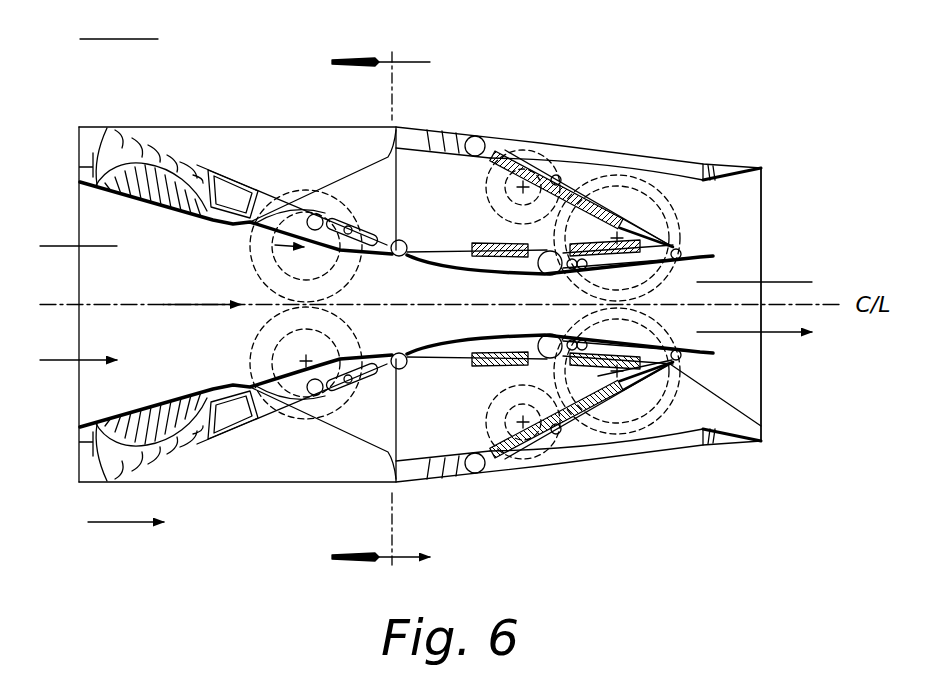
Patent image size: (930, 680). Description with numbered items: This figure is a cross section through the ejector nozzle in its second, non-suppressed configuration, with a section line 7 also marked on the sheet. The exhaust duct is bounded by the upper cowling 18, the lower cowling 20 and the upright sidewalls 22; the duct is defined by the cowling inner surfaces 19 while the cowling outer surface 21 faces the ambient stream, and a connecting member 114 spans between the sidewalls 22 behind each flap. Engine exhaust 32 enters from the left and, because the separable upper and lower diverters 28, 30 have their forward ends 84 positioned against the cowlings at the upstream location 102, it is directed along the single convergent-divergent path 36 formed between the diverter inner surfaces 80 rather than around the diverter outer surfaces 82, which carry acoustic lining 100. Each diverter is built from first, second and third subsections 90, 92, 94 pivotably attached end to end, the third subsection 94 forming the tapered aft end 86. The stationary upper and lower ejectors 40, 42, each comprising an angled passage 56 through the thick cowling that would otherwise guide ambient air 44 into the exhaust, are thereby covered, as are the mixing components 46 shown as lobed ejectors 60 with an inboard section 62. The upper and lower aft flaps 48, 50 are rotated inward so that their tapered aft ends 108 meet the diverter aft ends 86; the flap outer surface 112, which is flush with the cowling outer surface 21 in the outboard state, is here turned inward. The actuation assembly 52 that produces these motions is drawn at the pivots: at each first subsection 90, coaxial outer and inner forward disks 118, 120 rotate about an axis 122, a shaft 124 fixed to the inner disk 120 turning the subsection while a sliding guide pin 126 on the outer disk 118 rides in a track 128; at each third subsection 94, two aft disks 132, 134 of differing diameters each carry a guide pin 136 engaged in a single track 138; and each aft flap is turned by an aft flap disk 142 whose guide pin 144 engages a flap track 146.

The section line 7- 7 is at (397, 308).
The upper cowling 18 is at (90, 127).
The cowling inner surface 19 is at (128, 193).
The lower cowling 20 is at (86, 482).
The cowling outer surface 21 is at (253, 126).
The upright sidewalls 22 is at (752, 192).
The upper diverter 28 is at (430, 243).
The lower diverter 30 is at (430, 364).
The engine exhaust 32 is at (55, 252).
The single path 36 is at (182, 303).
The upper ejector 40 is at (176, 118).
The lower ejector 42 is at (296, 496).
The ambient air 44 is at (93, 42).
The mixing components 46 is at (400, 204).
The upper aft flap 48 is at (618, 200).
The lower aft flap 50 is at (607, 430).
The actuation assembly 52 is at (690, 221).
The angled passage 56 is at (243, 185).
The lobed ejector 60 is at (370, 168).
The inboard section 62 is at (377, 443).
The diverter inner surface 80 is at (462, 272).
The diverter outer surface 82 is at (474, 244).
The diverter forward end 84 is at (256, 223).
The diverter aft end 86 is at (713, 257).
The first subsection 90 is at (262, 405).
The second subsection 92 is at (453, 350).
The third subsection 94 is at (635, 333).
The acoustic lining 100 is at (518, 158).
The upstream location 102 is at (177, 397).
The tapered aft end 108 is at (763, 427).
The flap outer surface 112 is at (576, 150).
The connecting member 114 is at (725, 170).
The outer forward disk 118 is at (234, 357).
The inner forward disk 120 is at (243, 328).
The axis 122 is at (258, 262).
The shaft 124 is at (314, 214).
The sliding guide pin 126 is at (340, 218).
The track 128 is at (348, 222).
The aft rotatable disk 132 is at (677, 183).
The aft rotatable disk 134 is at (657, 177).
The guide pin 136 is at (573, 336).
The track 138 is at (570, 276).
The aft flap disk 142 is at (550, 150).
The guide pin 144 is at (582, 150).
The flap track 146 is at (484, 142).